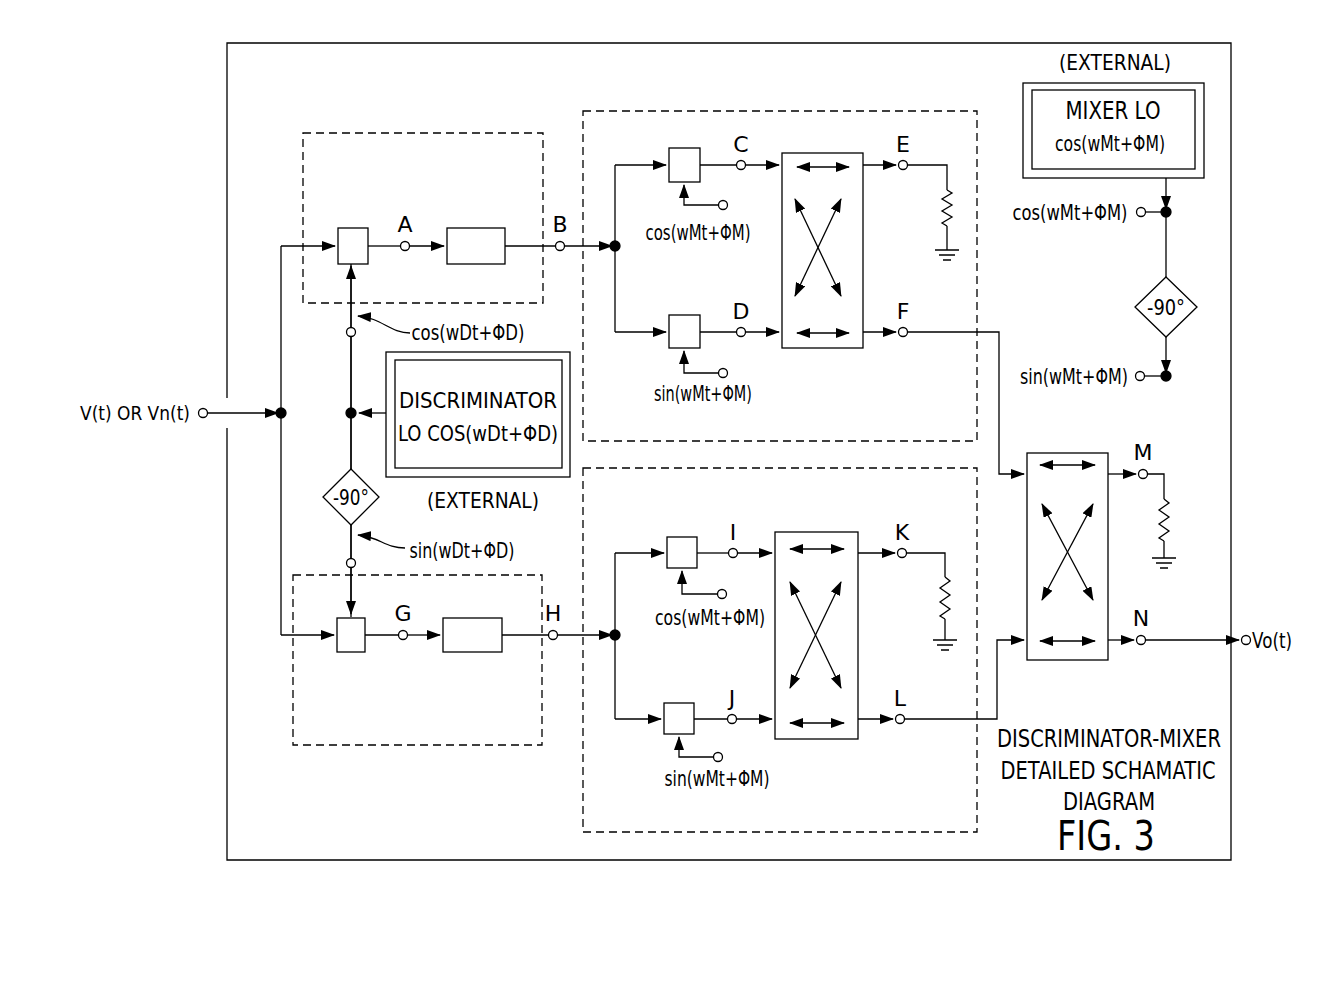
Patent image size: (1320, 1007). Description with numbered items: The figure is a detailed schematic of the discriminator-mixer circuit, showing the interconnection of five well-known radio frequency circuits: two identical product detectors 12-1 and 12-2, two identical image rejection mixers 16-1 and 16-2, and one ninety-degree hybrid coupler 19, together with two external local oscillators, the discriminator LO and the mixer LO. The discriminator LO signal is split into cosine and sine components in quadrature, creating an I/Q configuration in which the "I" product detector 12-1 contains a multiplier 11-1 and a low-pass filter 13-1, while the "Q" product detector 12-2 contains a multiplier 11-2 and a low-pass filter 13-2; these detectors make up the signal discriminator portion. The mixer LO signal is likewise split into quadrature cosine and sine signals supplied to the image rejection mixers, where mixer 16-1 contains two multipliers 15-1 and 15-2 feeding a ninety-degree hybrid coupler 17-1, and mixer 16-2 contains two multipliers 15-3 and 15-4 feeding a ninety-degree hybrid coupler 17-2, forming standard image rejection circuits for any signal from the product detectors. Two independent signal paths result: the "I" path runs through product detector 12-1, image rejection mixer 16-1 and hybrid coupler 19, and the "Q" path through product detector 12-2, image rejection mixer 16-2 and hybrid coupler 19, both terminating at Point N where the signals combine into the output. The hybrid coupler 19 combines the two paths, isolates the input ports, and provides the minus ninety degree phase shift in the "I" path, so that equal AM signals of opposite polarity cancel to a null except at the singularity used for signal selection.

The multiplier 11-1 is at (357, 227).
The multiplier 11-2 is at (351, 652).
The I product detector 12-1 is at (348, 133).
The Q product detector 12-2 is at (398, 747).
The low-pass filter 13-1 is at (470, 227).
The low-pass filter 13-2 is at (472, 652).
The multiplier 15-1 is at (685, 148).
The multiplier 15-2 is at (685, 315).
The multiplier 15-3 is at (680, 537).
The multiplier 15-4 is at (677, 703).
The image rejection mixer 16-1 is at (622, 110).
The image rejection mixer 16-2 is at (608, 470).
The 90° hybrid coupler 17-1 is at (822, 153).
The 90° hybrid coupler 17-2 is at (815, 532).
The 90° hybrid coupler 19 is at (1060, 453).